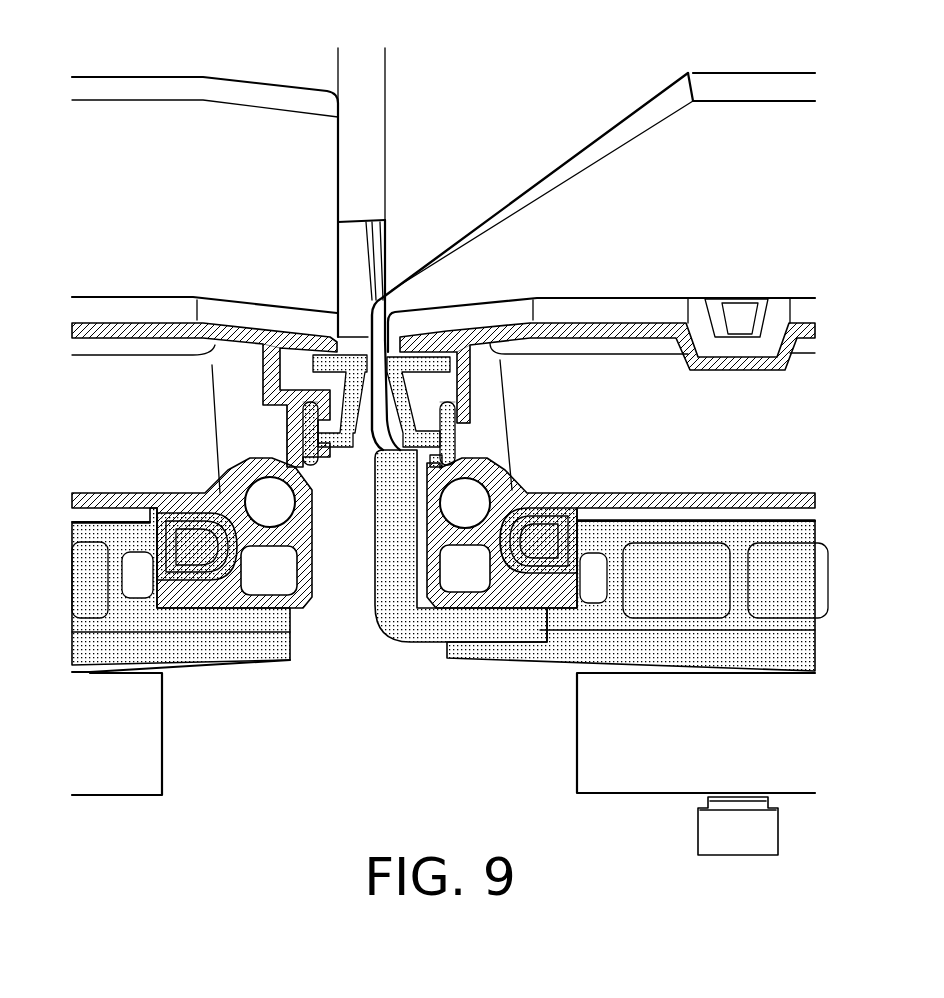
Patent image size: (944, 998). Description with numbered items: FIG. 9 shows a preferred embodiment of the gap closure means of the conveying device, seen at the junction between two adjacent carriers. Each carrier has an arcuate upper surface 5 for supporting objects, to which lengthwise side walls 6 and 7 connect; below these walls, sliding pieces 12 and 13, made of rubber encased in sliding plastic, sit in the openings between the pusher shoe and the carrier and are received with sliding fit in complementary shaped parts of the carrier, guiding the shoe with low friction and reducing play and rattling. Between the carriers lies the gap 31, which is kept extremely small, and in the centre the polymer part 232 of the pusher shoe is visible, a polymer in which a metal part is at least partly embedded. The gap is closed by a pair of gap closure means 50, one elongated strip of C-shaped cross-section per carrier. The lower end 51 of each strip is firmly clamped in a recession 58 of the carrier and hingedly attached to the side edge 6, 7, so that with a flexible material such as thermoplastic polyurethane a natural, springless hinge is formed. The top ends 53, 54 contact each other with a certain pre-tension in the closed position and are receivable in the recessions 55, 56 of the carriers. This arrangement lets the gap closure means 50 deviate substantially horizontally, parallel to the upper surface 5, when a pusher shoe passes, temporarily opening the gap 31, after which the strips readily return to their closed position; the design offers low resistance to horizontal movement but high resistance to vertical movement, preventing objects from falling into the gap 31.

The arcuate upper surface 5 is at (138, 313).
The side wall 6 is at (493, 455).
The side wall 7 is at (233, 468).
The sliding piece 12 is at (540, 550).
The sliding piece 13 is at (188, 548).
The gap 31 is at (290, 53).
The gap closure means 50 is at (270, 443).
The lower end of the C-shaped cross-section 51 is at (293, 417).
The top end of the C-shaped cross-section 53 is at (440, 358).
The top end of the C-shaped cross-section 54 is at (270, 380).
The recession 55 is at (433, 382).
The recession 56 is at (300, 360).
The recession 58 is at (437, 467).
The polymer part 232 is at (362, 563).